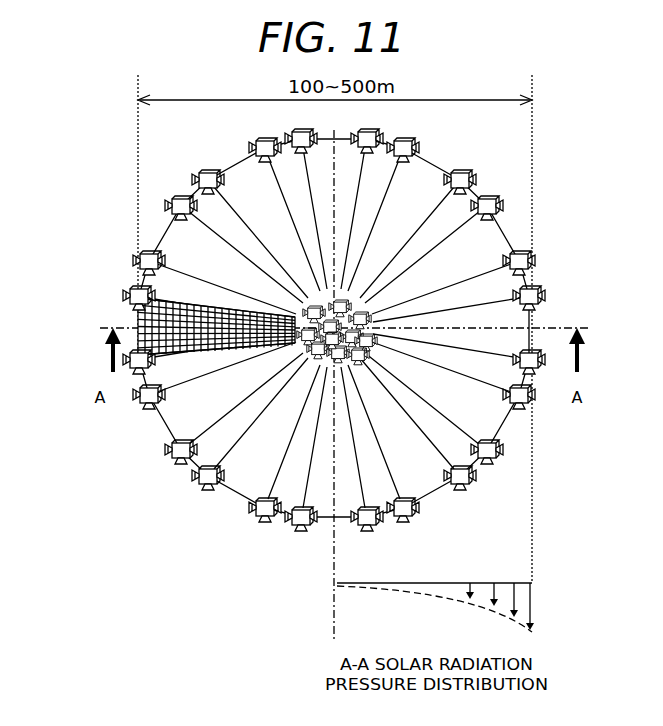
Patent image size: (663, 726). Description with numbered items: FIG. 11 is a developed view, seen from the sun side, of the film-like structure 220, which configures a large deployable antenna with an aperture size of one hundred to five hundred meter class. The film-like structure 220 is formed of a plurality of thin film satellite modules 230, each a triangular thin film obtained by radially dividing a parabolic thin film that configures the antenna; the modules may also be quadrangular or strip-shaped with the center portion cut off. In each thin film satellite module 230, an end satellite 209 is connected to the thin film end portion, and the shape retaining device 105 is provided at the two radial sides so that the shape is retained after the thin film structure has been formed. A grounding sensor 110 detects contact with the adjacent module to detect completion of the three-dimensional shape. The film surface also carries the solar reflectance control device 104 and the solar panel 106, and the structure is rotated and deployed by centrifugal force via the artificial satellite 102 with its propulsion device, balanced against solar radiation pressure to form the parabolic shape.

The artificial satellite 102 is at (302, 310).
The solar reflectance control device 104 is at (160, 304).
The shape retaining device 105 is at (446, 141).
The solar panel 106 is at (138, 322).
The grounding sensor 110 is at (416, 152).
The end satellite 209 is at (530, 258).
The film-like structure 220 is at (212, 147).
The thin film satellite module 230 is at (505, 241).